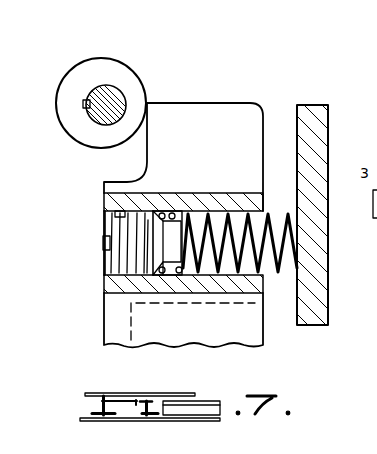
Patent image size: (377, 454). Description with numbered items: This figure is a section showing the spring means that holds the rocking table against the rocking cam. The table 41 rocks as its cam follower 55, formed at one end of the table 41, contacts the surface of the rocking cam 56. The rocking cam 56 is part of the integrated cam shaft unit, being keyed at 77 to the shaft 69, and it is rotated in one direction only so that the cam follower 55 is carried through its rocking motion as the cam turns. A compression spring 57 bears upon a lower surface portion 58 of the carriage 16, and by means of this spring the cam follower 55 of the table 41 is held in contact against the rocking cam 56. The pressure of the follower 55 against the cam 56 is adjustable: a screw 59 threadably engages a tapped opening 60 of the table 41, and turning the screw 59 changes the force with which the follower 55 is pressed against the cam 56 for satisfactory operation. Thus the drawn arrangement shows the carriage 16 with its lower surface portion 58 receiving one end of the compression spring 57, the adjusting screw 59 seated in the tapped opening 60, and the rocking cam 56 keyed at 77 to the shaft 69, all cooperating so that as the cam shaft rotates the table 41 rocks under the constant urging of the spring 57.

The carriage 16 is at (309, 162).
The table 41 is at (104, 313).
The cam follower 55 is at (145, 138).
The rocking cam 56 is at (78, 59).
The compression spring 57 is at (205, 212).
The lower surface portion 58 is at (297, 153).
The screw 59 is at (104, 222).
The tapped opening 60 is at (106, 203).
The shaft 69 is at (97, 86).
The key 77 is at (83, 101).